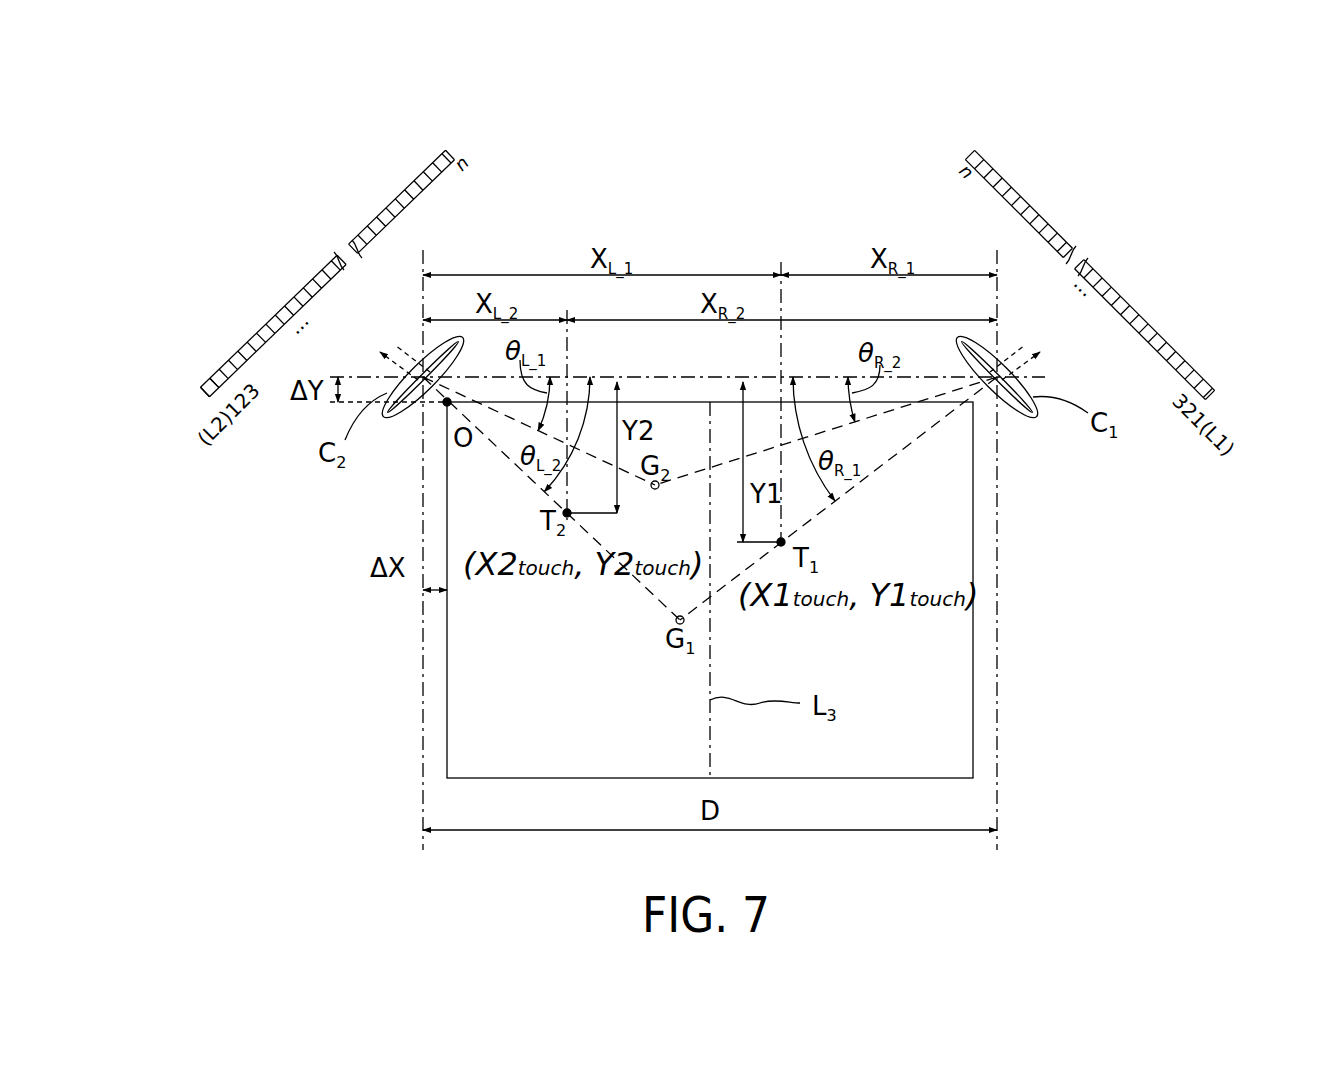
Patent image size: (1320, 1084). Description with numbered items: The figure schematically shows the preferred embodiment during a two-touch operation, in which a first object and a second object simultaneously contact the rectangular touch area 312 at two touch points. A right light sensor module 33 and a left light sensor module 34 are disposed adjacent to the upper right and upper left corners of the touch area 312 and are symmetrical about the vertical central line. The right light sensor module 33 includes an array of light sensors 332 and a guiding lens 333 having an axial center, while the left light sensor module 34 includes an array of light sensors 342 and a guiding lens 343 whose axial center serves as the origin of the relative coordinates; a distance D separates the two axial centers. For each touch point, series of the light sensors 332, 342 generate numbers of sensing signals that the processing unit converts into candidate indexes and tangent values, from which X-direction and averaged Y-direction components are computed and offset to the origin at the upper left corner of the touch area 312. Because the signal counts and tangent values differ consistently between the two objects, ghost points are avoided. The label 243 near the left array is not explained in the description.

The touch area 312 is at (925, 635).
The right light sensor module 33 is at (1187, 277).
The array of light sensors 332 is at (1047, 217).
The guiding lens 333 is at (1020, 417).
The left light sensor module 34 is at (237, 277).
The array of light sensors 342 is at (373, 217).
The guiding lens 343 is at (397, 410).
The sensor pixel end 243 is at (200, 400).